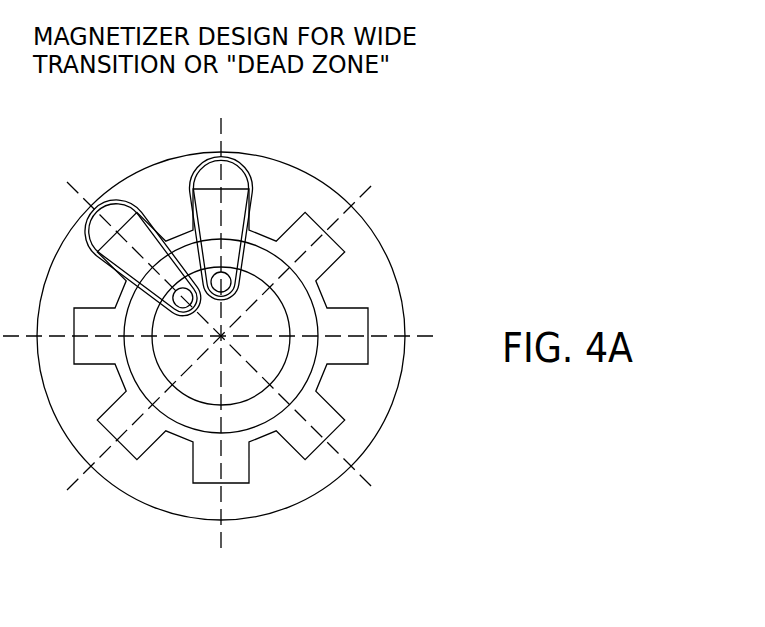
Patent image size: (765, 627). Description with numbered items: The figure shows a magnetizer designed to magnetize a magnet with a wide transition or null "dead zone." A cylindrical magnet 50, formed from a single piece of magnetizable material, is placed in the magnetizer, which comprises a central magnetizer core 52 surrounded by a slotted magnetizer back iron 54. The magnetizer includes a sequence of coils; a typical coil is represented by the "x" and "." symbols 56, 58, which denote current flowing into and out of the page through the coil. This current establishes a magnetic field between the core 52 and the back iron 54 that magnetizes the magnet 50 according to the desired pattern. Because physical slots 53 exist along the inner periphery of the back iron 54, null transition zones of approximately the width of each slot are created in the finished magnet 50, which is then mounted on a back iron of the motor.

The cylindrical magnet 50 is at (318, 299).
The magnetizer core 52 is at (272, 373).
The physical slots 53 is at (333, 241).
The slotted magnetizer back iron 54 is at (383, 363).
The coil current flow into the page 56 is at (152, 224).
The coil current flow out of the page 58 is at (189, 212).